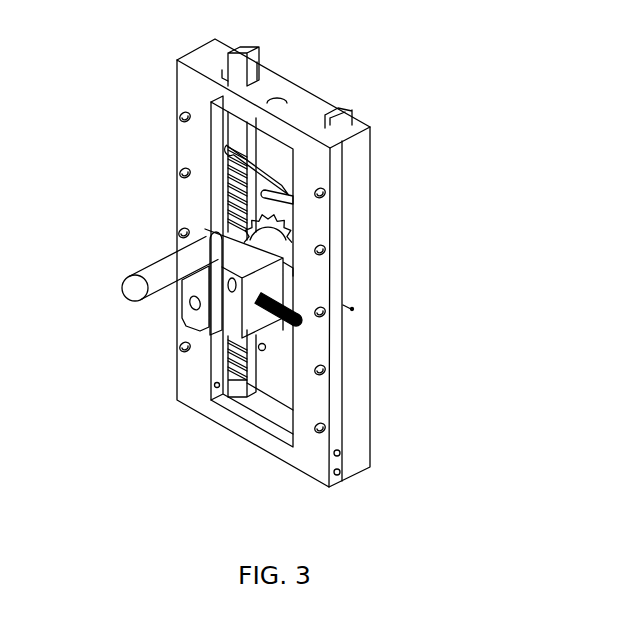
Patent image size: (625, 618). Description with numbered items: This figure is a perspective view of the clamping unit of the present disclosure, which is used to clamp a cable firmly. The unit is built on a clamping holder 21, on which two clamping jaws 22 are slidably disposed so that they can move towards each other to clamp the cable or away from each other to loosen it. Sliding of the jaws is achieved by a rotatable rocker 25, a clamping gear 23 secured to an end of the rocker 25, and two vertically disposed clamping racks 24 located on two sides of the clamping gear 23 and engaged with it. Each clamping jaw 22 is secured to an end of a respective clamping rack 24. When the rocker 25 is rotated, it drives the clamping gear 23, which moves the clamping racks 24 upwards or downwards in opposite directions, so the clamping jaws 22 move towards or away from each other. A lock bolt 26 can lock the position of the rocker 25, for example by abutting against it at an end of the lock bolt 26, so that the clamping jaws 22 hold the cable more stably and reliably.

The clamping holder 21 is at (192, 150).
The clamping jaw 22 is at (255, 165).
The clamping gear 23 is at (270, 240).
The clamping rack 24 is at (227, 188).
The rocker 25 is at (140, 308).
The lock bolt 26 is at (293, 308).